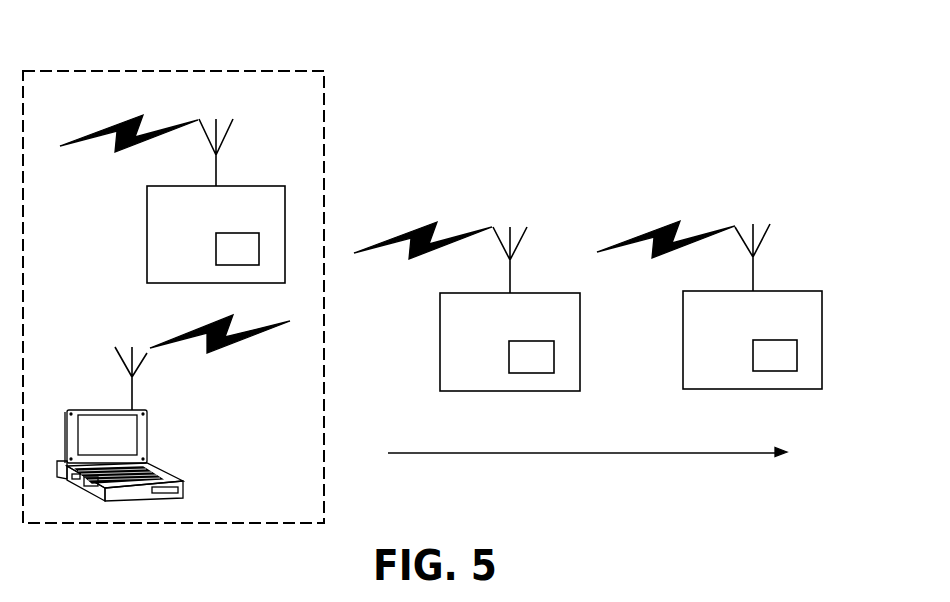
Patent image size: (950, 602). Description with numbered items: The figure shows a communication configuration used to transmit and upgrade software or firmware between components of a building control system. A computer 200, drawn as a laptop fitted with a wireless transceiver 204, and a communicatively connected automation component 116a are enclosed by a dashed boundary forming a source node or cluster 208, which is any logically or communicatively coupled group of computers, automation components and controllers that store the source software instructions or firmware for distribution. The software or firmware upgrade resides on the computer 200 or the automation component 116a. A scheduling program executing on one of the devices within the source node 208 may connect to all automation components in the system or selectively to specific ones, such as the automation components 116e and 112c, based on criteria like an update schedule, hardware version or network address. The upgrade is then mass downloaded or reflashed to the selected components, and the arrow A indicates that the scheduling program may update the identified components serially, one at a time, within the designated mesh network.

The source node or cluster 208 is at (220, 58).
The automation component 116a is at (134, 238).
The automation component 116e is at (594, 354).
The automation component 112c is at (835, 353).
The wireless transceiver 204 is at (149, 395).
The computer 200 is at (199, 487).
The arrow A is at (600, 465).